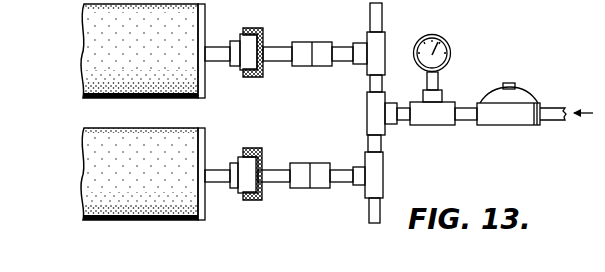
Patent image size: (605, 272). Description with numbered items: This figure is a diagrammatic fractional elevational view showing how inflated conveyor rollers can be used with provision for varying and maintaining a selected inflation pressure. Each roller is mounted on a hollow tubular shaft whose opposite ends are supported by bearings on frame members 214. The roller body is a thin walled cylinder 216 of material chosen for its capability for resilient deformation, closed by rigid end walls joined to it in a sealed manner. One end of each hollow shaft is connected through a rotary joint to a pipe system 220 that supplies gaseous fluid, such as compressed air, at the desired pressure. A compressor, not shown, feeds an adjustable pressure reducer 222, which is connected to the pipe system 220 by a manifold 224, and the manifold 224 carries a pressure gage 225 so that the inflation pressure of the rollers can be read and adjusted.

The thin walled cylinder 216 is at (93, 78).
The frame member 214 is at (259, 73).
The pipe system 220 is at (386, 149).
The pressure gage 225 is at (452, 50).
The manifold 224 is at (467, 121).
The adjustable pressure reducer 222 is at (530, 95).